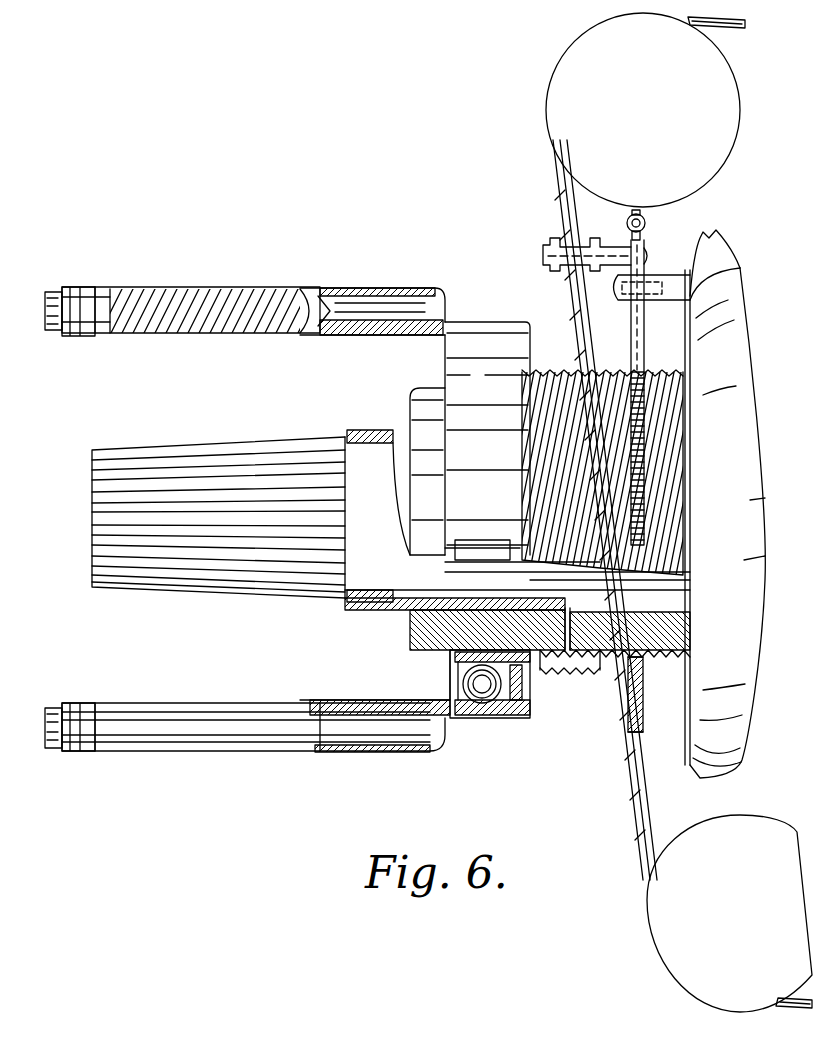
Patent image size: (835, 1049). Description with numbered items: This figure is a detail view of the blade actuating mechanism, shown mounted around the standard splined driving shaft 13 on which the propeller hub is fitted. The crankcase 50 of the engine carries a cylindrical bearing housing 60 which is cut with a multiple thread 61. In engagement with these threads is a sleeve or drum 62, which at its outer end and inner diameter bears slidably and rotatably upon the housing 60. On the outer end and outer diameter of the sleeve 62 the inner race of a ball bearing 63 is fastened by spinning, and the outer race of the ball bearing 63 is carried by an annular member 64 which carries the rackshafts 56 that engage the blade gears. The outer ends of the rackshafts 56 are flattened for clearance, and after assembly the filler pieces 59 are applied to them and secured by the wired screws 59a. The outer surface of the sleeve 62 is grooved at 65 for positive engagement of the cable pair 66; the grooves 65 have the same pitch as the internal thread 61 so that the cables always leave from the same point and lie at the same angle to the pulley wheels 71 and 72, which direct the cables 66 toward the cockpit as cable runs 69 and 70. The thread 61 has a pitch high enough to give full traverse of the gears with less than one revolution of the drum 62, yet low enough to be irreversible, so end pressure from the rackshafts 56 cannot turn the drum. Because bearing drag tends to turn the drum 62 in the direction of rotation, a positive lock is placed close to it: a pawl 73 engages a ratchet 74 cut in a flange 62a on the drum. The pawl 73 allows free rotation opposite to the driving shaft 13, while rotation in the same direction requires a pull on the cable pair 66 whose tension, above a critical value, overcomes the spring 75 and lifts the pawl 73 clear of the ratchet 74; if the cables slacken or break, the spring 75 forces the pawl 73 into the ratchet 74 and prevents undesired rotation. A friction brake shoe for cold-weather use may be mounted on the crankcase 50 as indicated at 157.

The driving shaft 13 is at (92, 520).
The crankcase 50 is at (725, 523).
The rackshaft 56 is at (120, 292).
The filler piece 59 is at (60, 290).
The wired screw 59a is at (48, 708).
The cylindrical bearing housing 60 is at (414, 637).
The threads 61 is at (656, 392).
The sleeve or drum 62 is at (570, 676).
The flange 62a is at (644, 672).
The ball bearing 63 is at (482, 703).
The annular member 64 is at (490, 325).
The cable grooves 65 is at (585, 302).
The cable pair 66 is at (632, 746).
The cable 69 is at (735, 28).
The cable 70 is at (794, 1016).
The pulley wheel 71 is at (643, 110).
The pulley wheel 72 is at (729, 913).
The pawl 73 is at (640, 347).
The ratchet 74 is at (643, 733).
The spring 75 is at (646, 222).
The friction brake shoe mounting 157 is at (704, 246).